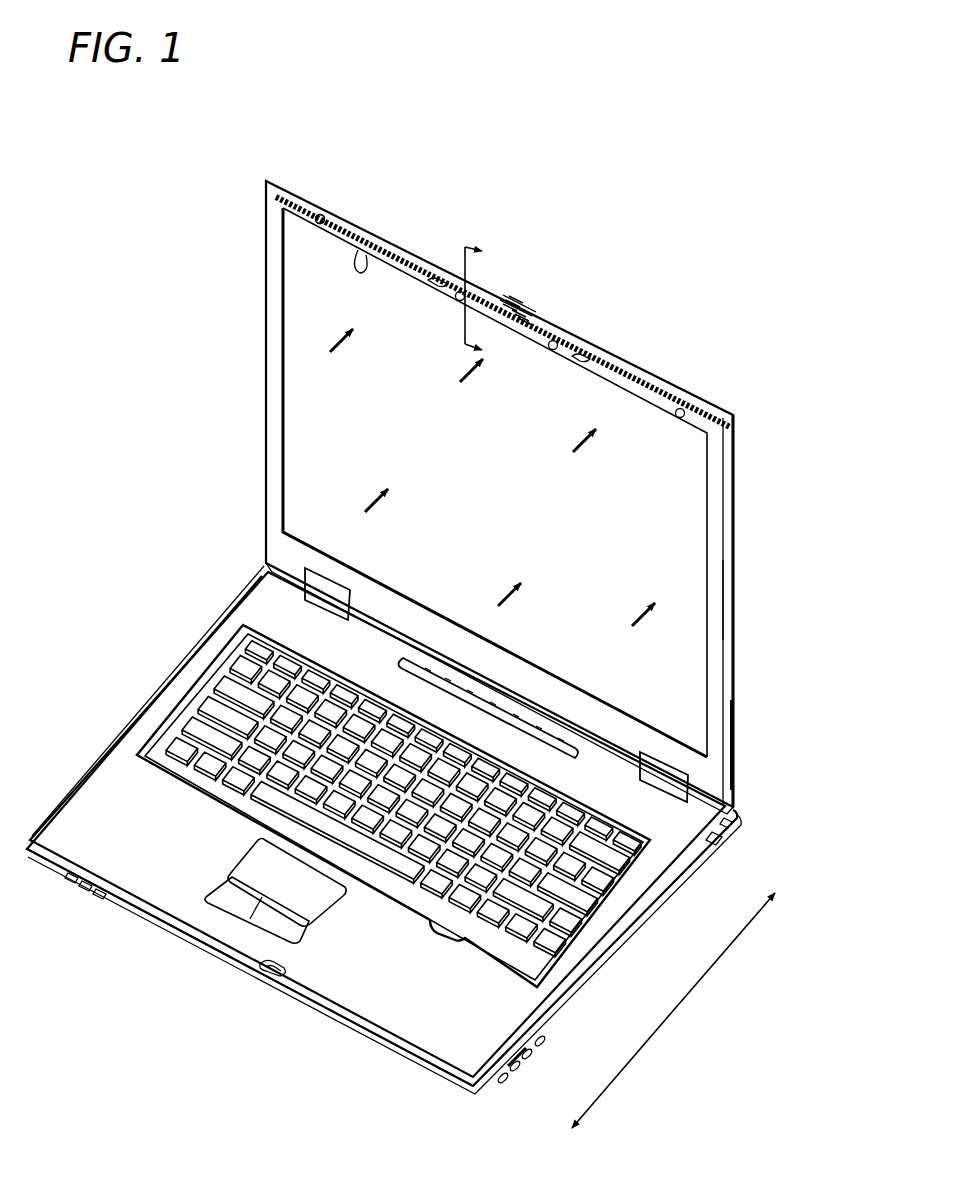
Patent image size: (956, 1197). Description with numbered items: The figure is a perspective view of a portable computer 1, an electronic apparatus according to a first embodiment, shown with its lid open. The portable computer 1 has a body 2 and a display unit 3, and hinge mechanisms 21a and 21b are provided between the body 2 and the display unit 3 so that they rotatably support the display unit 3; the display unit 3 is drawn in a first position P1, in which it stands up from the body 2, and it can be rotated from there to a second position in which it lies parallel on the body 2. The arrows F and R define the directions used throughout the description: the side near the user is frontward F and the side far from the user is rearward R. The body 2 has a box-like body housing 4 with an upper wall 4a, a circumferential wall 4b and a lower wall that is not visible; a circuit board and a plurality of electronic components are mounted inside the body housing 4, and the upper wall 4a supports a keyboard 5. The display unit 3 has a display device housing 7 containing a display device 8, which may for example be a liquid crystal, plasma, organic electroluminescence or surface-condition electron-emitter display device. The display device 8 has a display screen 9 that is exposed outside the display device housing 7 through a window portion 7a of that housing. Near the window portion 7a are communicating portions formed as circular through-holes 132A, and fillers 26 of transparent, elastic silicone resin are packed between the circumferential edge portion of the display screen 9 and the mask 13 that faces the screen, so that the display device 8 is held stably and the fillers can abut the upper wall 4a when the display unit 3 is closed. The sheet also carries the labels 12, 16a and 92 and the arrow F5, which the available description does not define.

The portable computer 1 is at (122, 282).
The body 2 is at (176, 665).
The display unit 3 is at (262, 360).
The body housing 4 is at (108, 822).
The upper wall 4a is at (398, 1022).
The circumferential wall 4b is at (618, 946).
The keyboard 5 is at (262, 680).
The display device housing 7 is at (626, 356).
The window portion 7a is at (362, 252).
The display device 8 is at (690, 500).
The display screen 9 is at (495, 482).
The front frame of display housing 12 is at (684, 390).
The mask 13 is at (714, 595).
The spring portion 16a is at (563, 328).
The hinge mechanism 21a is at (340, 600).
The hinge mechanism 21b is at (656, 772).
The filler 26 is at (320, 219).
The through-hole 132A is at (321, 215).
The rear wall of display housing 92 is at (732, 737).
The first position P1 is at (180, 556).
The force direction F5 is at (462, 284).
The rearward R is at (723, 943).
The frontward F is at (614, 1070).